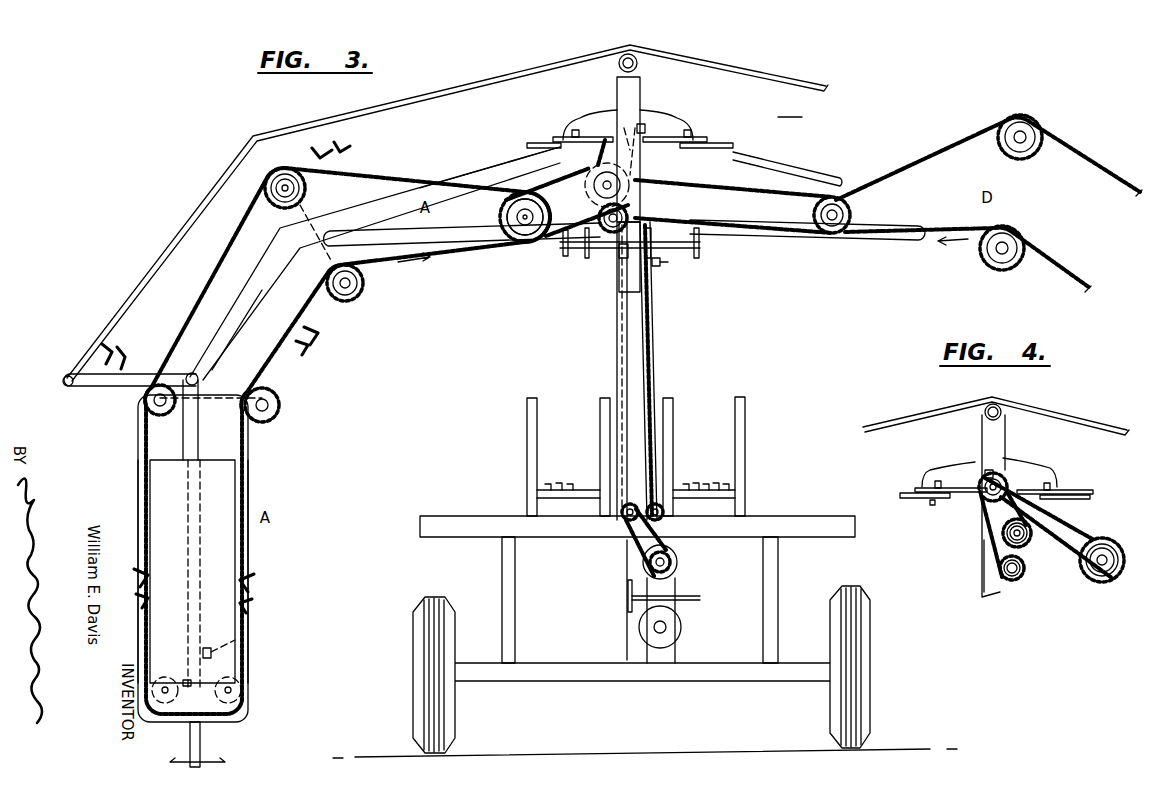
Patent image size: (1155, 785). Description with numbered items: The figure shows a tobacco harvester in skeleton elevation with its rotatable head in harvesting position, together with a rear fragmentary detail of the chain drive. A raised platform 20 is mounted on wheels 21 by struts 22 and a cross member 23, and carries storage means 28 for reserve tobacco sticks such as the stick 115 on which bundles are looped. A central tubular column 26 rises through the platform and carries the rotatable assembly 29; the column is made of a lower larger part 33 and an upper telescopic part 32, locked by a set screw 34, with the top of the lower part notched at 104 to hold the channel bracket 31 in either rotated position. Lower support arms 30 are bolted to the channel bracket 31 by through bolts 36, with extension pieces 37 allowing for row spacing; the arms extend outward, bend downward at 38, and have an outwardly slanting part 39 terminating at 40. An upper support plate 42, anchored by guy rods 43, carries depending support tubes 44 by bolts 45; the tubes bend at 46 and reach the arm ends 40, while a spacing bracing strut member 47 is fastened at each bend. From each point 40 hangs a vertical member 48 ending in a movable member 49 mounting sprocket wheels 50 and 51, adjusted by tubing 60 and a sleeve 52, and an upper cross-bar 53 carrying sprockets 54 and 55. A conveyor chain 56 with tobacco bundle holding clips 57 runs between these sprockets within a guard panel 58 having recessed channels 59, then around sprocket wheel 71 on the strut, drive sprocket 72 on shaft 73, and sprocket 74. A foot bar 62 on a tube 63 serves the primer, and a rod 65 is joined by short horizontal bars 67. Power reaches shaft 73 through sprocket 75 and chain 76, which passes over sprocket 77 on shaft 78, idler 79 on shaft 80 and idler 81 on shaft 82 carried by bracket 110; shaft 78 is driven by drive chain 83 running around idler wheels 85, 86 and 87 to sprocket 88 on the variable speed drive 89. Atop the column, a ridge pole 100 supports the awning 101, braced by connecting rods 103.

In FIG. 3, the raised platform 20 is at (474, 518).
In FIG. 3, the wheels 21 is at (423, 628).
In FIG. 3, the struts 22 is at (510, 608).
In FIG. 3, the cross member 23 is at (562, 660).
In FIG. 3, the central tubular column 26 is at (619, 97).
In FIG. 4, the central tubular column 26 is at (985, 434).
In FIG. 3, the storage means 28 is at (745, 422).
In FIG. 3, the assembly 29 is at (790, 108).
In FIG. 3, the lower support arms 30 is at (418, 240).
In FIG. 3, the channel bracket 31 is at (672, 248).
In FIG. 3, the upper telescopic column part 32 is at (642, 160).
In FIG. 4, the upper telescopic column part 32 is at (985, 584).
In FIG. 3, the lower tubular column part 33 is at (654, 298).
In FIG. 3, the set screw 34 is at (667, 266).
In FIG. 3, the through bolts 36 is at (562, 246).
In FIG. 3, the extension pieces 37 is at (580, 242).
In FIG. 3, the bend 38 is at (320, 256).
In FIG. 3, the lower outwardly slanting part 39 is at (237, 350).
In FIG. 3, the arm end 40 is at (199, 380).
In FIG. 3, the upper support plate 42 is at (567, 136).
In FIG. 3, the guy rods 43 is at (590, 116).
In FIG. 4, the guy rods 43 is at (936, 469).
In FIG. 3, the depending support tubes 44 is at (476, 171).
In FIG. 4, the depending support tubes 44 is at (914, 500).
In FIG. 3, the bolts 45 is at (531, 146).
In FIG. 4, the bolts 45 is at (1068, 488).
In FIG. 3, the bend 46 is at (282, 224).
In FIG. 3, the spacing bracing strut member 47 is at (324, 222).
In FIG. 3, the vertical member 48 is at (207, 420).
In FIG. 3, the movable member 49 is at (202, 713).
In FIG. 3, the sprocket wheel 50 is at (163, 720).
In FIG. 3, the sprocket wheel 51 is at (240, 712).
In FIG. 3, the sleeve 52 is at (243, 641).
In FIG. 3, the cross-bar 53 is at (212, 405).
In FIG. 3, the sprocket wheel 54 is at (145, 404).
In FIG. 3, the sprocket wheel 55 is at (280, 406).
In FIG. 3, the conveyor chain 56 is at (396, 178).
In FIG. 3, the tobacco bundle holding clips 57 is at (322, 331).
In FIG. 3, the guard panel 58 is at (180, 474).
In FIG. 3, the recessed channels 59 is at (145, 460).
In FIG. 3, the tubing 60 is at (184, 680).
In FIG. 3, the foot bar 62 is at (216, 765).
In FIG. 3, the tube 63 is at (203, 752).
In FIG. 3, the rod 65 is at (65, 382).
In FIG. 3, the short horizontal bars 67 is at (131, 374).
In FIG. 3, the sprocket wheel 71 is at (350, 300).
In FIG. 3, the sprocket wheel 72 is at (505, 216).
In FIG. 3, the shaft 73 is at (535, 210).
In FIG. 4, the shaft 73 is at (1084, 556).
In FIG. 3, the sprocket wheel 74 is at (305, 190).
In FIG. 4, the sprocket wheel 75 is at (1100, 578).
In FIG. 3, the chain 76 is at (536, 188).
In FIG. 4, the chain 76 is at (1095, 530).
In FIG. 4, the sprocket wheel 77 is at (1028, 533).
In FIG. 3, the shaft 78 is at (630, 187).
In FIG. 4, the shaft 78 is at (1018, 526).
In FIG. 4, the idler sprocket wheel 79 is at (1022, 578).
In FIG. 3, the shaft 80 is at (607, 234).
In FIG. 4, the shaft 80 is at (1018, 568).
In FIG. 4, the idler sprocket wheel 81 is at (980, 510).
In FIG. 3, the shaft 82 is at (645, 130).
In FIG. 4, the shaft 82 is at (980, 499).
In FIG. 3, the drive chain 83 is at (648, 340).
In FIG. 3, the idler wheel 85 is at (603, 218).
In FIG. 3, the idler wheel 86 is at (620, 514).
In FIG. 3, the idler wheel 87 is at (663, 520).
In FIG. 3, the sprocket 88 is at (675, 563).
In FIG. 3, the variable speed drive 89 is at (676, 577).
In FIG. 3, the ridge pole 100 is at (640, 64).
In FIG. 3, the awning 101 is at (470, 74).
In FIG. 3, the connecting rods 103 is at (432, 94).
In FIG. 3, the notch 104 is at (621, 256).
In FIG. 4, the bracket 110 is at (983, 460).
In FIG. 3, the tobacco stick 115 is at (708, 478).